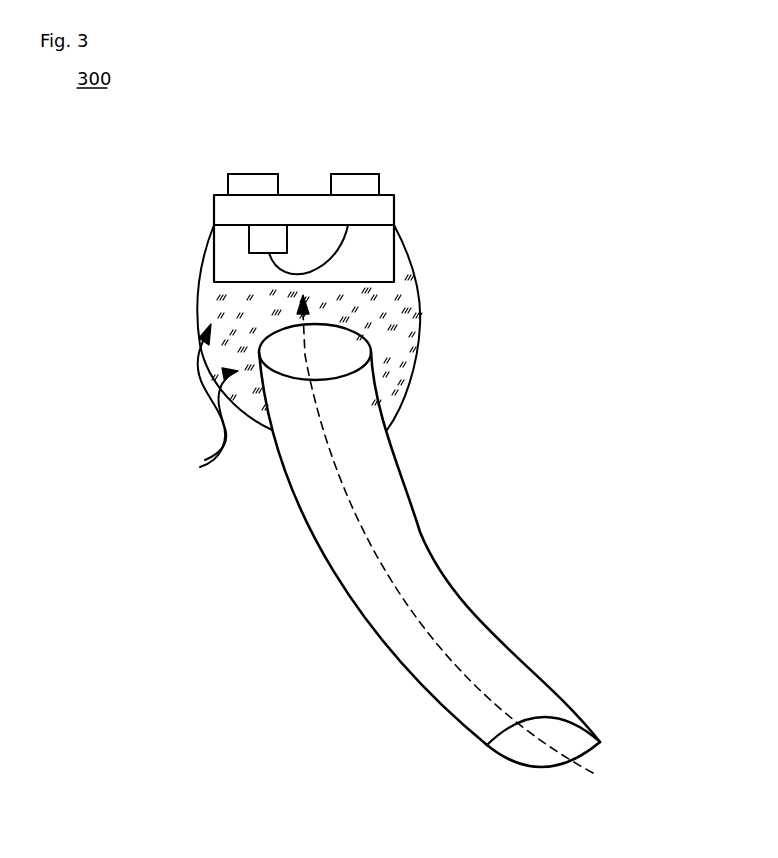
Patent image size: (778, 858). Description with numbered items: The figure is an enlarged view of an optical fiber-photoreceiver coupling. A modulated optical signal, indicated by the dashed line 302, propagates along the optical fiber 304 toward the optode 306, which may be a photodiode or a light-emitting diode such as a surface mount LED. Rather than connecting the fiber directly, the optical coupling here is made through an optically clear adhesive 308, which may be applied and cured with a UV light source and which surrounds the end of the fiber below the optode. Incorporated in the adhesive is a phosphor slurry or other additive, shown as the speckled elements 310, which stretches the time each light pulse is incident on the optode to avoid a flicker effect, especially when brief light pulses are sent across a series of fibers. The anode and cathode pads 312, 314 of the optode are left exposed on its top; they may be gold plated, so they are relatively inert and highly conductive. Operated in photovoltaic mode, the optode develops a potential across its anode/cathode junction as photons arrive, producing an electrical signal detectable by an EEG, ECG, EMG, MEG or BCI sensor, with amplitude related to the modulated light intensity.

The dashed line 302 is at (417, 620).
The optical fiber 304 is at (420, 532).
The optode 306 is at (395, 210).
The optically clear adhesive 308 is at (417, 300).
The speckled elements 310 is at (195, 399).
The anode pad 312 is at (259, 173).
The cathode pad 314 is at (360, 173).